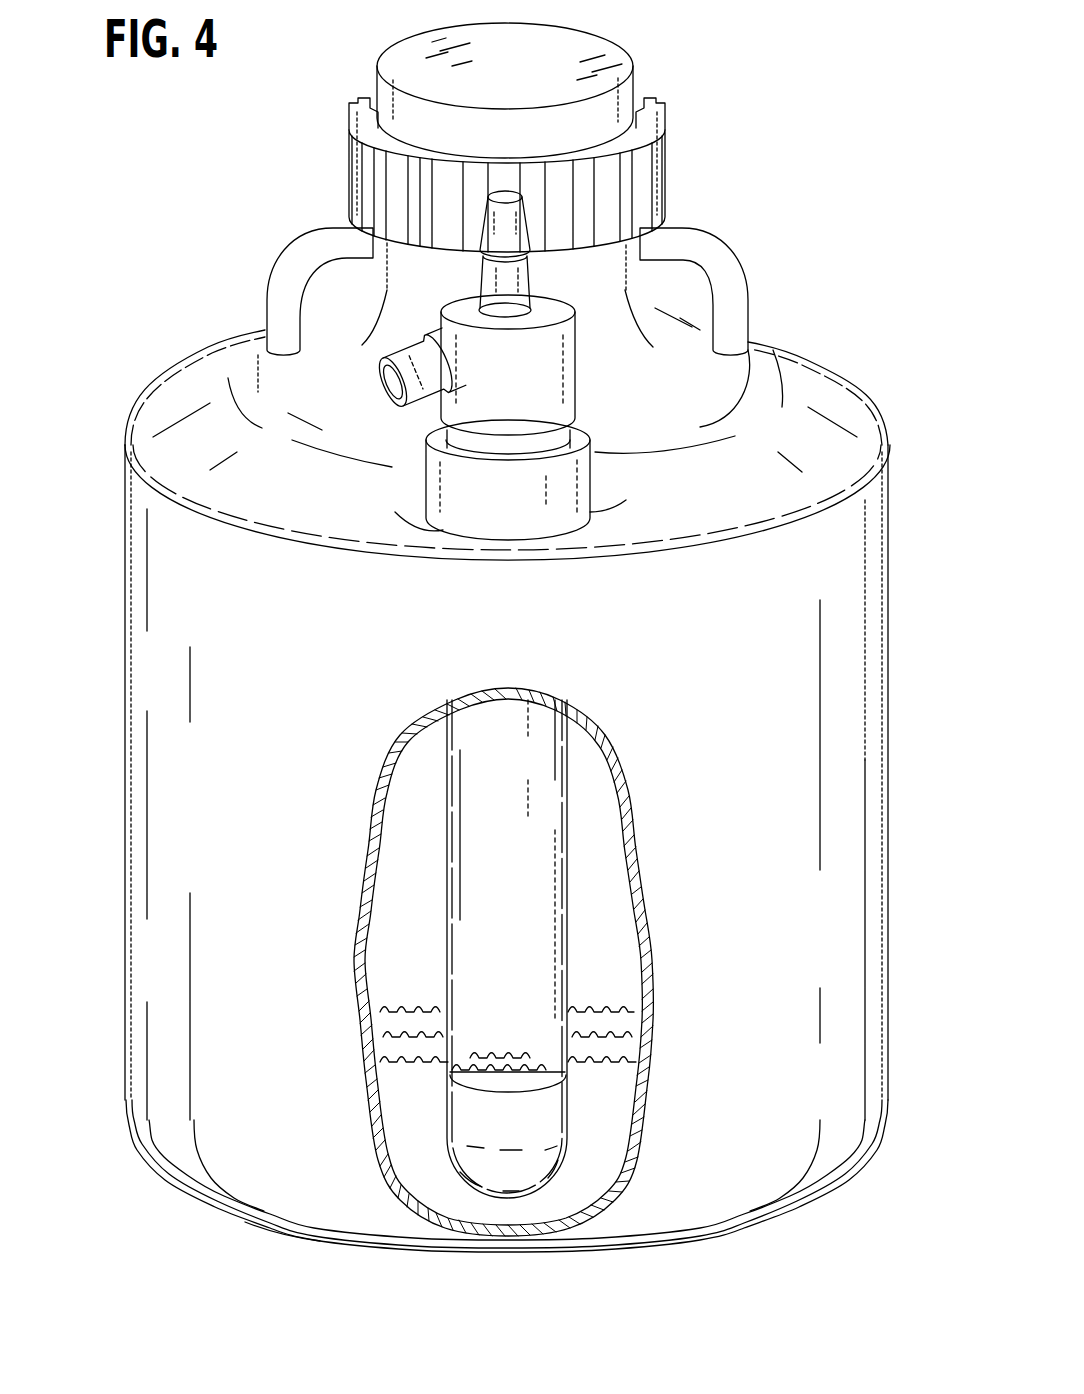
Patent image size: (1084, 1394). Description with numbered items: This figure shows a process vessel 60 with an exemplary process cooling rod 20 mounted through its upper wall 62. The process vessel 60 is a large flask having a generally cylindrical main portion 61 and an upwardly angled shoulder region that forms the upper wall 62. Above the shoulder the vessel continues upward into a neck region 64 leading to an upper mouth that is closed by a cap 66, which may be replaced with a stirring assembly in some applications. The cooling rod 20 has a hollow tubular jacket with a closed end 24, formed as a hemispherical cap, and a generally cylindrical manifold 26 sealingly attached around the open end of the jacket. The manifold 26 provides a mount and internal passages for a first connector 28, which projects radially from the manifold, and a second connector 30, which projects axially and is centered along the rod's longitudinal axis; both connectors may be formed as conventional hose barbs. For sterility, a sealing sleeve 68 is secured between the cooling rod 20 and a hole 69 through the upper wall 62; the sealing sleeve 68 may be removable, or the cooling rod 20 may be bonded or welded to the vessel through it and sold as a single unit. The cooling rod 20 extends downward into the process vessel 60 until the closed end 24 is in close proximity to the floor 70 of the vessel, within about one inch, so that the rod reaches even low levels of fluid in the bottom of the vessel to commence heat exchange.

The process vessel 60 is at (718, 86).
The cap 66 is at (378, 80).
The neck region 64 is at (604, 292).
The upper wall 62 is at (240, 387).
The second connector 30 is at (482, 274).
The first connector 28 is at (415, 358).
The manifold 26 is at (555, 370).
The hole 69 is at (440, 530).
The sealing sleeve 68 is at (566, 512).
The main portion 61 is at (126, 862).
The process cooling rod 20 is at (574, 932).
The closed end 24 is at (522, 1163).
The floor 70 is at (275, 1228).